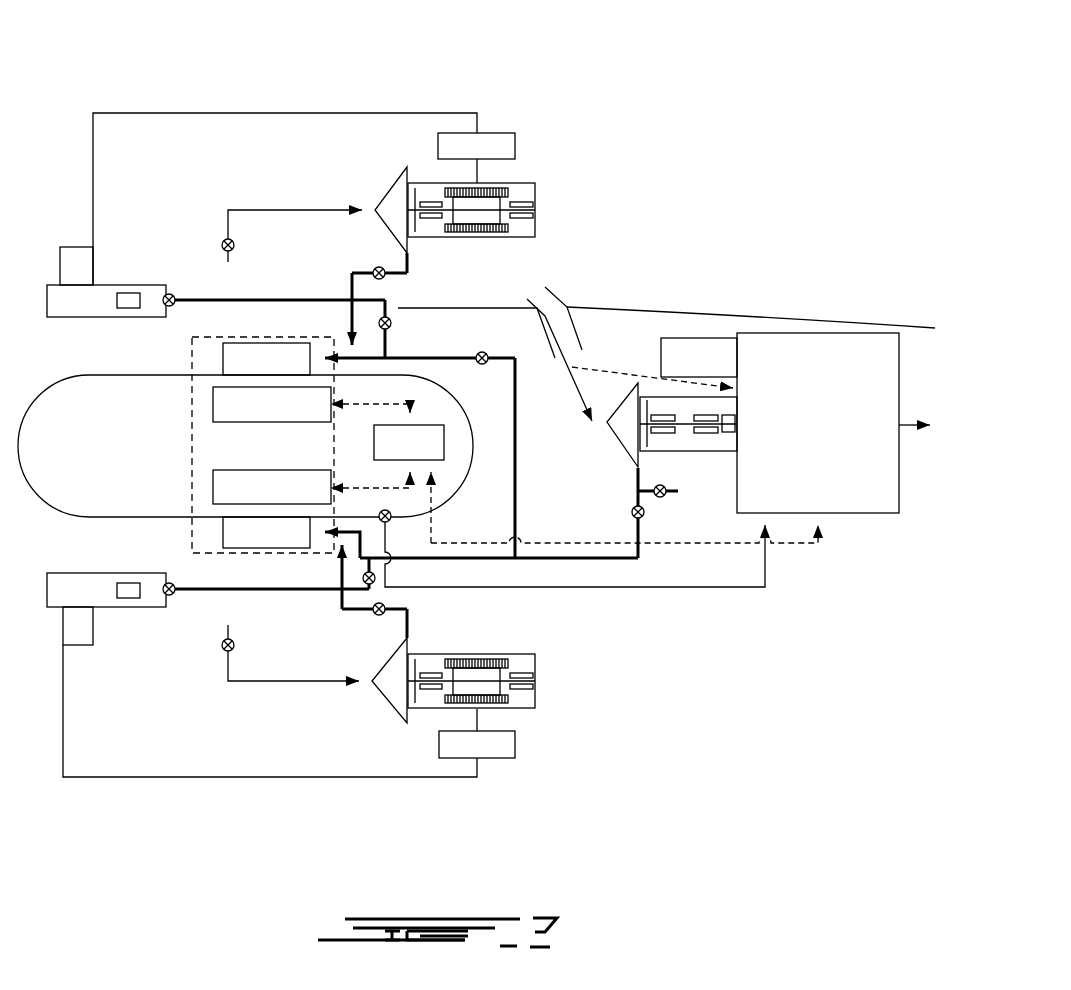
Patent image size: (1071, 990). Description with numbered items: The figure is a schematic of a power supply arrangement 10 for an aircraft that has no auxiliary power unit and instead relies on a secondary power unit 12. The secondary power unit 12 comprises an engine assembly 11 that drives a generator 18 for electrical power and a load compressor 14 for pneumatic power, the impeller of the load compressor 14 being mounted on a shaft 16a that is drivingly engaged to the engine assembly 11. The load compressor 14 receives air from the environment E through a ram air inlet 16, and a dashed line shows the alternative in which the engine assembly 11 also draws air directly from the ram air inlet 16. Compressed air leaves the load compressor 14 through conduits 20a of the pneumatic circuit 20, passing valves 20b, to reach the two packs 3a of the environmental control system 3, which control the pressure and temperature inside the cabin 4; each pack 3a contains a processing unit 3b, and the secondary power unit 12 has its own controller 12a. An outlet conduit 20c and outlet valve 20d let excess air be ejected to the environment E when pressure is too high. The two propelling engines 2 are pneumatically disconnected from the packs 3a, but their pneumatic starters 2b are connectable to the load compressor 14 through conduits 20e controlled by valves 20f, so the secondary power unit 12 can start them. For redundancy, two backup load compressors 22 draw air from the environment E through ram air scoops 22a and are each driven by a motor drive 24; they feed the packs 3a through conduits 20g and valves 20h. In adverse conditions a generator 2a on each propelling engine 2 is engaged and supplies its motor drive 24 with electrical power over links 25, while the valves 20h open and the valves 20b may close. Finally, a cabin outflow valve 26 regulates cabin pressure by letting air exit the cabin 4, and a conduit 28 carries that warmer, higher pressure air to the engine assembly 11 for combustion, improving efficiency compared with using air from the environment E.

The propelling engine 2 is at (101, 284).
The generator 2a is at (60, 262).
The pneumatic starter 2b is at (134, 292).
The environmental control system 3 is at (192, 355).
The ECS pack 3a is at (278, 372).
The processing unit 3b is at (284, 416).
The cabin 4 is at (106, 452).
The power supply arrangement 10 is at (640, 106).
The engine assembly 11 is at (836, 438).
The secondary power unit 12 is at (704, 146).
The controller 12a is at (430, 455).
The load compressor 14 is at (620, 448).
The ram air inlet 16 is at (580, 284).
The shaft 16a is at (687, 426).
The generator 18 is at (700, 338).
The pneumatic circuit 20 is at (500, 474).
The conduit 20a is at (518, 517).
The valve 20b is at (487, 356).
The outlet conduit 20c is at (660, 486).
The outlet valve 20d is at (660, 497).
The conduit 20e is at (215, 301).
The valve 20f is at (172, 292).
The conduit 20g is at (412, 266).
The valve 20h is at (385, 279).
The backup load compressor 22 is at (392, 187).
The ram air scoop 22a is at (247, 258).
The motor drive 24 is at (500, 133).
The link 25 is at (272, 113).
The cabin outflow valve 26 is at (381, 511).
The conduit 28 is at (705, 587).
The environment E is at (702, 232).